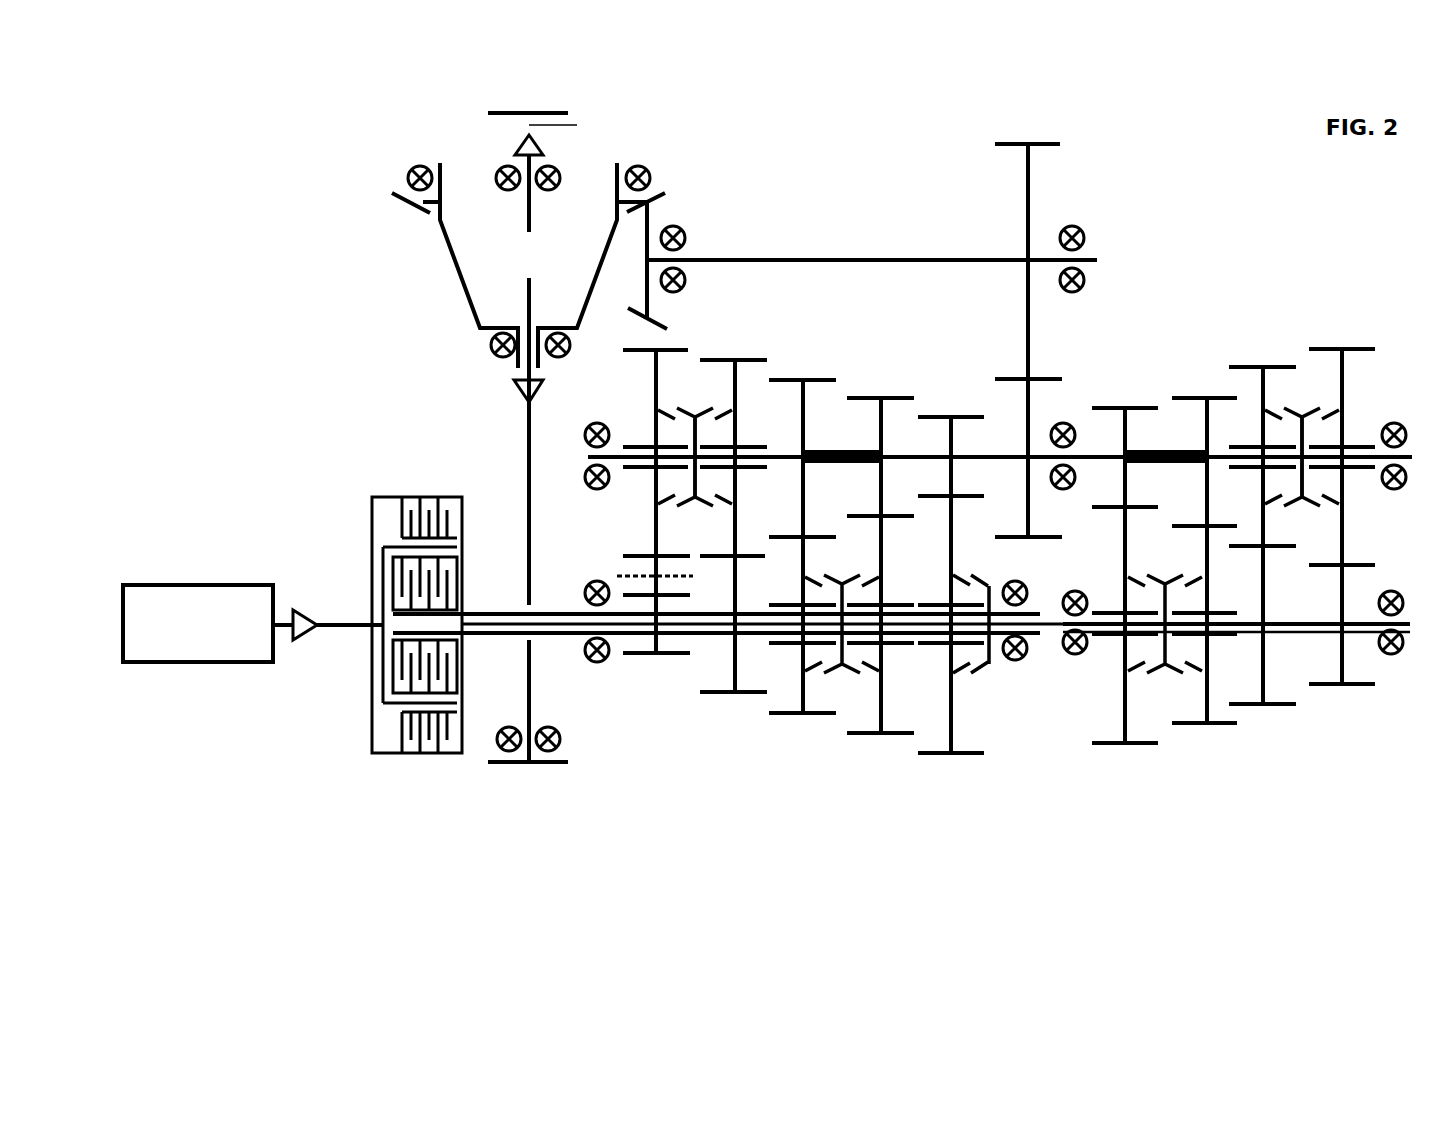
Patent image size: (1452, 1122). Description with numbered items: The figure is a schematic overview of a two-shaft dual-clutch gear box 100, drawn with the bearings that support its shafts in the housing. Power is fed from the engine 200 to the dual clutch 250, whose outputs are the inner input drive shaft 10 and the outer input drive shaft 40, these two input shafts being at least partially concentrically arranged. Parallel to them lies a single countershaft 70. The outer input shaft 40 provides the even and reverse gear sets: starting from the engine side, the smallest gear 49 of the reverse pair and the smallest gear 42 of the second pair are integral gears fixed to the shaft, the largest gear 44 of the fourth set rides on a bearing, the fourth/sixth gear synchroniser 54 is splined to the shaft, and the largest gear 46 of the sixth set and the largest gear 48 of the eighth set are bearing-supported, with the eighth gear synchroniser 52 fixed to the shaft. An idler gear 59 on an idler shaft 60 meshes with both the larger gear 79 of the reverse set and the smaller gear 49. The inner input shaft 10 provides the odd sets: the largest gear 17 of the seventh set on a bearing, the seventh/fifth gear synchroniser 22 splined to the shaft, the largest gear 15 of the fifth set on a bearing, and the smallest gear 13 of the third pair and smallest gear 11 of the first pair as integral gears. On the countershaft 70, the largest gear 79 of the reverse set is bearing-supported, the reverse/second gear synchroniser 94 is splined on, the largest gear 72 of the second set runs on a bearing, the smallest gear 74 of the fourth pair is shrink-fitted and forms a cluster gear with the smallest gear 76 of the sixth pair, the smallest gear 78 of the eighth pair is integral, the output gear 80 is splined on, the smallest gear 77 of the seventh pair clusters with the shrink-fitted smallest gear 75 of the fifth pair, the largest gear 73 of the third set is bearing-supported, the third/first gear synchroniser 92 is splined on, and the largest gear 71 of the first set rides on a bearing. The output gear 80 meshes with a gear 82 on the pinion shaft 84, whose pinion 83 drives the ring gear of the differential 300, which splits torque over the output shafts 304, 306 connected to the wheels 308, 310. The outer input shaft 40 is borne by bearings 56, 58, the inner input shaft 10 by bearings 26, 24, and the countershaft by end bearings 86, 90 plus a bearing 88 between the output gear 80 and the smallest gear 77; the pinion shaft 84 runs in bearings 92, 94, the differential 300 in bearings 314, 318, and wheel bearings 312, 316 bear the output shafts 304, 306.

The gear box 100 is at (1242, 262).
The engine 200 is at (208, 663).
The dual clutch 250 is at (408, 753).
The inner input drive shaft 10 is at (1360, 627).
The outer input drive shaft 40 is at (548, 612).
The countershaft 70 is at (1412, 457).
The differential 300 is at (529, 448).
The output shaft 304 is at (577, 125).
The output shaft 306 is at (529, 425).
The wheel 308 is at (548, 112).
The wheel 310 is at (507, 763).
The wheel bearing 312 is at (505, 168).
The bearing 314 is at (412, 170).
The wheel bearing 316 is at (509, 727).
The bearing 318 is at (488, 344).
The pinion 83 is at (660, 192).
The pinion shaft 84 is at (811, 260).
The gear 82 is at (1048, 144).
The output gear 80 is at (1040, 377).
The largest gear of the reverse gear set 79 is at (676, 349).
The largest gear of the 2nd gear set 72 is at (730, 358).
The smallest gear of the 4th gear pair 74 is at (812, 378).
The smallest gear of the 6th gear pair 76 is at (866, 396).
The smallest gear of the 8th gear pair 78 is at (935, 415).
The smallest gear of the 7th gear pair 77 is at (1112, 406).
The smallest gear of the 5th gear pair 75 is at (1185, 396).
The largest gear of the 3rd gear set 73 is at (1240, 365).
The largest gear of the 1st gear set 71 is at (1322, 347).
The bearing 86 is at (596, 423).
The bearing 88 is at (1063, 489).
The bearing 90 is at (1394, 489).
The 3rd/1st gear synchroniser 92 is at (683, 230).
The reverse/2nd gear synchroniser 94 is at (1080, 228).
The bearing 56 is at (597, 662).
The bearing 58 is at (1015, 660).
The bearing 26 is at (1075, 654).
The bearing 24 is at (1403, 647).
The idler gear 59 is at (627, 555).
The idler shaft 60 is at (617, 576).
The smallest gear of the reverse gear pair 49 is at (672, 655).
The smallest gear of the 2nd gear pair 42 is at (757, 694).
The largest gear of the 4th gear set 44 is at (822, 715).
The largest gear of the 6th gear set 46 is at (897, 735).
The largest gear of the 8th gear set 48 is at (972, 755).
The largest gear of the 7th gear set 17 is at (1141, 745).
The largest gear of the 5th gear set 15 is at (1216, 725).
The smallest gear of the 3rd gear pair 13 is at (1283, 706).
The smallest gear of the 1st gear pair 11 is at (1358, 686).
The 4th/6th gear synchroniser 54 is at (842, 664).
The 8th gear synchroniser 52 is at (989, 664).
The 7th/5th gear synchroniser 22 is at (1165, 664).